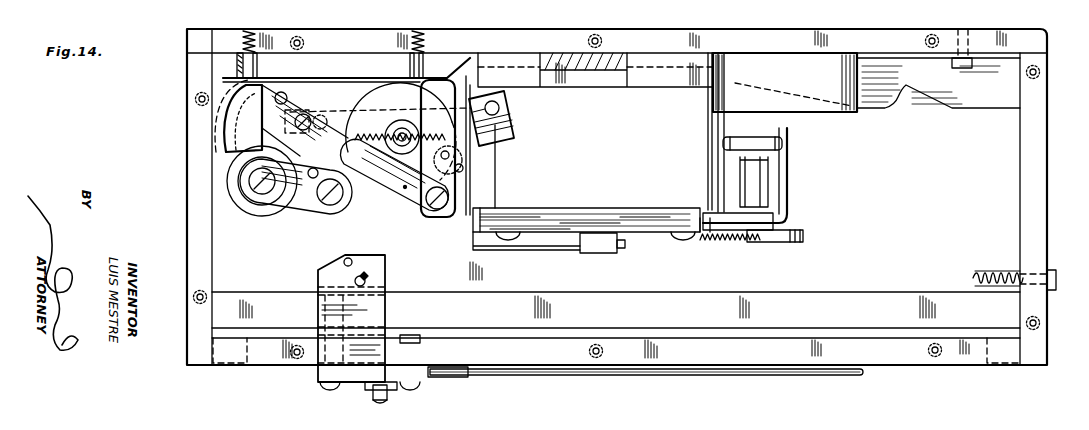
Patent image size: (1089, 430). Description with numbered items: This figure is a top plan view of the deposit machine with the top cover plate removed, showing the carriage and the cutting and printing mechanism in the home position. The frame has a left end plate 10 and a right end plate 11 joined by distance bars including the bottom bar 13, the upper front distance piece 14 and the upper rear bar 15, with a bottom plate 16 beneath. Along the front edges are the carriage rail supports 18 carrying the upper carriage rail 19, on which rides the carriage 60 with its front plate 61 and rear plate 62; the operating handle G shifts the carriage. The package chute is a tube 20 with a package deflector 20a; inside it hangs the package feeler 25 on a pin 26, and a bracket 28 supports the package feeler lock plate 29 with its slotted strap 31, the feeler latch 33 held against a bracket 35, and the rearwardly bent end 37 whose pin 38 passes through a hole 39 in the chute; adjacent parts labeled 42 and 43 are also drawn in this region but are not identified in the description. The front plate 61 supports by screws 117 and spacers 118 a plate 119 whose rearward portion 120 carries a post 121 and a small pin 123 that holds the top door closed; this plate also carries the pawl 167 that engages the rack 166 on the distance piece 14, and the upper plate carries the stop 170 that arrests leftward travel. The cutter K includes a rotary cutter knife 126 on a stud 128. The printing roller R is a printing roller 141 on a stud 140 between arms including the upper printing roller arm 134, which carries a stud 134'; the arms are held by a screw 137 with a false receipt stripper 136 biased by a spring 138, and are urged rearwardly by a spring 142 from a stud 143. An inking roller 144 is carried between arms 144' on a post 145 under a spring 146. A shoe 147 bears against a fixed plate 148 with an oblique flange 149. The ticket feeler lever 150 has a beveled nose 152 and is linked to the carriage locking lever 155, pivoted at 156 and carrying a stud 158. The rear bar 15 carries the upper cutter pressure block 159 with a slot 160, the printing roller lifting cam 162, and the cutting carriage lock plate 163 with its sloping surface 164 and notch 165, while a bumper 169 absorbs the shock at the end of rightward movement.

The left end plate 10 is at (197, 140).
The right end plate 11 is at (1033, 128).
The distance piece 13 is at (376, 10).
The upper front distance piece 14 is at (898, 358).
The upper rear bar 15 is at (870, 37).
The bottom plate 16 is at (903, 231).
The carriage rail support 18 is at (233, 333).
The upper carriage rail 19 is at (843, 297).
The tube 20 is at (636, 210).
The package deflector 20a is at (538, 209).
The package feeler 25 is at (647, 206).
The pin 26 is at (712, 102).
The bracket 28 is at (770, 200).
The package feeler lock plate 29 is at (702, 210).
The slotted strap 31 is at (716, 241).
The feeler latch 33 is at (524, 248).
The bracket 35 is at (556, 256).
The rearwardly bent end 37 is at (784, 173).
The pin 38 is at (765, 137).
The hole 39 is at (740, 137).
The flange 42 is at (795, 230).
The rack teeth 43 is at (742, 244).
The carriage 60 is at (311, 377).
The front plate 61 is at (447, 332).
The rear plate 62 is at (490, 246).
The screw 117 is at (322, 385).
The spacer 118 is at (407, 367).
The plate 119 is at (476, 378).
The portion 120 is at (330, 308).
The post 121 is at (362, 275).
The pin 123 is at (350, 257).
The rotary cutter knife 126 is at (374, 100).
The stud 128 is at (402, 120).
The upper printing roller arm 134 is at (394, 183).
The stud 134' is at (273, 80).
The false receipt stripper 136 is at (471, 176).
The screw 137 is at (412, 214).
The spring 138 is at (480, 143).
The stud 140 is at (262, 108).
The printing roller 141 is at (241, 130).
The spring 142 is at (393, 168).
The stud 143 is at (348, 148).
The inking roller 144 is at (260, 195).
The arm 144' is at (262, 207).
The post 145 is at (315, 212).
The spring 146 is at (342, 187).
The shoe 147 is at (226, 124).
The fixed plate 148 is at (243, 32).
The oblique flange 149 is at (470, 58).
The ticket feeler lever 150 is at (304, 88).
The beveled nose 152 is at (232, 92).
The carriage locking lever 155 is at (514, 118).
The pivot 156 is at (502, 77).
The stud 158 is at (500, 107).
The upper cutter pressure block 159 is at (655, 70).
The slot 160 is at (603, 78).
The printing roller lifting cam 162 is at (718, 100).
The cutting carriage lock plate 163 is at (975, 110).
The sloping surface 164 is at (833, 108).
The notch 165 is at (906, 85).
The rack 166 is at (681, 377).
The pawl 167 is at (460, 363).
The bumper 169 is at (987, 264).
The stop 170 is at (272, 334).
The plate E is at (437, 146).
The carriage operating handle G is at (373, 393).
The rotary cutter K is at (372, 110).
The printing roller R is at (306, 95).